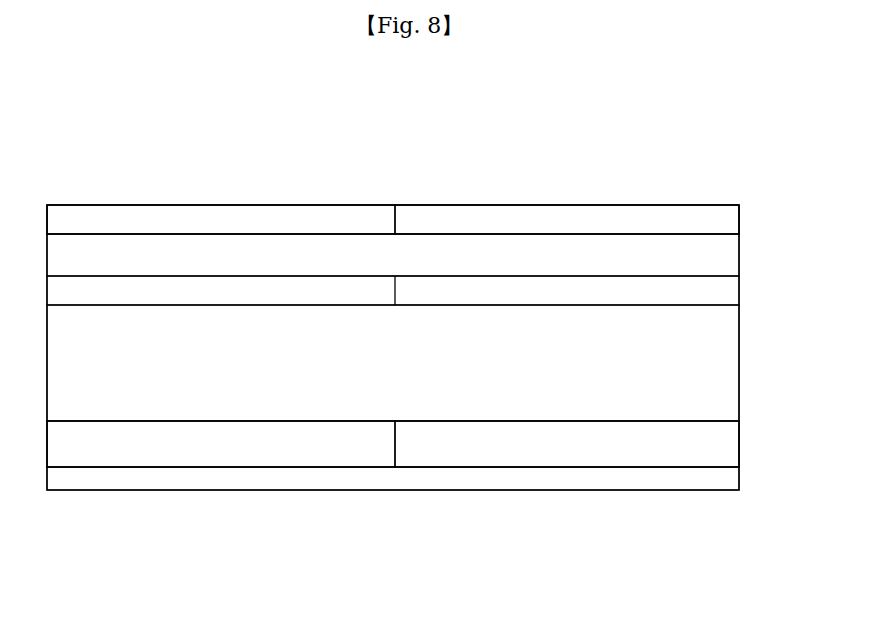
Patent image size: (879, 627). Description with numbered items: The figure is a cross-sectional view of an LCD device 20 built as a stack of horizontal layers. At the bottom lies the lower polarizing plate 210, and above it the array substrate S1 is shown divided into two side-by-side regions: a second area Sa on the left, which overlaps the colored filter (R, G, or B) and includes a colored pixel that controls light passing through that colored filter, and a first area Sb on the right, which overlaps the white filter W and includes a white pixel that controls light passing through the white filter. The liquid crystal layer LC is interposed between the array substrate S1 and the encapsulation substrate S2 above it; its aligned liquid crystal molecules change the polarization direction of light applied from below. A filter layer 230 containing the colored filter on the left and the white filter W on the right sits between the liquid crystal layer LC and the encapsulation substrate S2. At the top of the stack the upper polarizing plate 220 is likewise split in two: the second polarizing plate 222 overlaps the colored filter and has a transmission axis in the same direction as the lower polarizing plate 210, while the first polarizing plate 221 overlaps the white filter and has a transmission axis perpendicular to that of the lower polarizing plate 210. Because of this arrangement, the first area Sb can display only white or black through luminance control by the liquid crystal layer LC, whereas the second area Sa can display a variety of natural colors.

The LCD device 20 is at (222, 124).
The upper polarizing plate 220 is at (433, 128).
The second polarizing plate 222 is at (316, 217).
The first polarizing plate 221 is at (472, 217).
The encapsulation substrate S2 is at (733, 259).
The color filter layer 230 is at (733, 293).
The liquid crystal layer LC is at (733, 367).
The array substrate S1 is at (445, 545).
The second area Sa is at (295, 452).
The first area Sb is at (505, 452).
The lower polarizing plate 210 is at (733, 486).